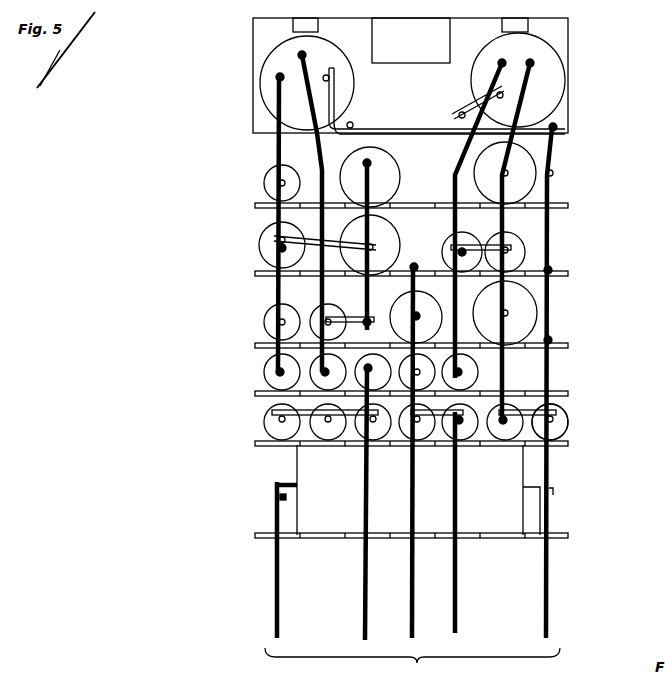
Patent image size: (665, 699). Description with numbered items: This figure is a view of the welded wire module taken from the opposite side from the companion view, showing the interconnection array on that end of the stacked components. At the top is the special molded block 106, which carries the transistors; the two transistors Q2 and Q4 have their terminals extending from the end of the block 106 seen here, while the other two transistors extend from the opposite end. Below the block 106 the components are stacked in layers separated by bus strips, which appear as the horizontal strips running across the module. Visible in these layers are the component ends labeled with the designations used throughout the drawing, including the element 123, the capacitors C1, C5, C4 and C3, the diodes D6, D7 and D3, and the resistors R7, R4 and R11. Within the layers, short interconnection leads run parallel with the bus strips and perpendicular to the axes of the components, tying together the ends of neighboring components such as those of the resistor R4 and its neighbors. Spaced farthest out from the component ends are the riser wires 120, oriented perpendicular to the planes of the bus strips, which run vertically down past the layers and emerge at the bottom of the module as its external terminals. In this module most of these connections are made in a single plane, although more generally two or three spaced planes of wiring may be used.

The molded block 106 is at (550, 33).
The transistor Q2 is at (272, 57).
The transistor Q4 is at (548, 88).
The component 123 is at (264, 183).
The capacitor C1 is at (390, 163).
The capacitor C5 is at (525, 160).
The diode D6 is at (262, 248).
The diode D7 is at (528, 240).
The diode D3 is at (262, 322).
The capacitor C4 is at (520, 330).
The resistor R7 is at (262, 372).
The resistor R4 is at (262, 422).
The resistor R11 is at (568, 432).
The capacitor C3 is at (305, 460).
The riser wires 120 is at (412, 667).